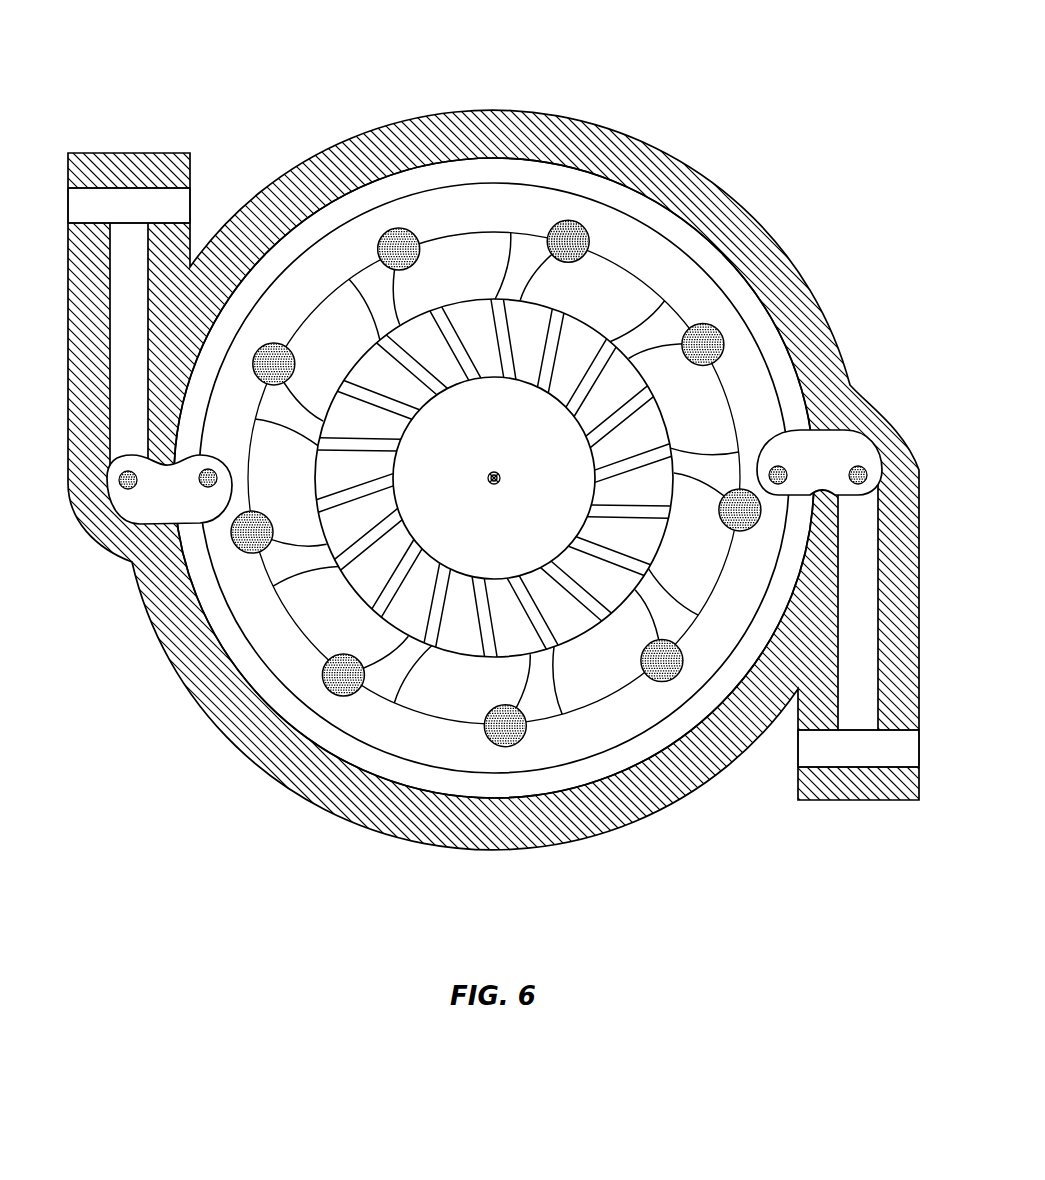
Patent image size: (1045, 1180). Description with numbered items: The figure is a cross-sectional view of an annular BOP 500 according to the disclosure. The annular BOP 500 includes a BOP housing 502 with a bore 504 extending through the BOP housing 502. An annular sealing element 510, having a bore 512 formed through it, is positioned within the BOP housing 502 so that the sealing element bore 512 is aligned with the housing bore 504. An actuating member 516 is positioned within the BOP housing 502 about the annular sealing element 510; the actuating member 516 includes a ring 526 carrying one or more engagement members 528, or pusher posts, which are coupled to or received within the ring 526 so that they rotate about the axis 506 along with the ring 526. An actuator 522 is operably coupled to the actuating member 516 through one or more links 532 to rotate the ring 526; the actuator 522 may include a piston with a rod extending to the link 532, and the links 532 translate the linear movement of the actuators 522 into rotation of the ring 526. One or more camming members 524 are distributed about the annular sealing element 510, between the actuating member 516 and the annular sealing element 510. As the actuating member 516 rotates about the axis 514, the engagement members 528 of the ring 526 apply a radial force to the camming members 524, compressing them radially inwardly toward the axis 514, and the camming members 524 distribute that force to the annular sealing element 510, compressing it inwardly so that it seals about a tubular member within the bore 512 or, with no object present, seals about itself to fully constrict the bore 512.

The annular BOP 500 is at (522, 457).
The BOP housing 502 is at (787, 252).
The bore 504 is at (580, 787).
The axis 506 is at (497, 473).
The annular sealing element 510 is at (652, 427).
The bore 512 is at (416, 545).
The axis 514 is at (495, 485).
The actuating member 516 is at (617, 197).
The actuator 522 is at (88, 205).
The camming member 524 is at (445, 683).
The ring 526 is at (436, 225).
The engagement member 528 is at (393, 222).
The link 532 is at (162, 508).